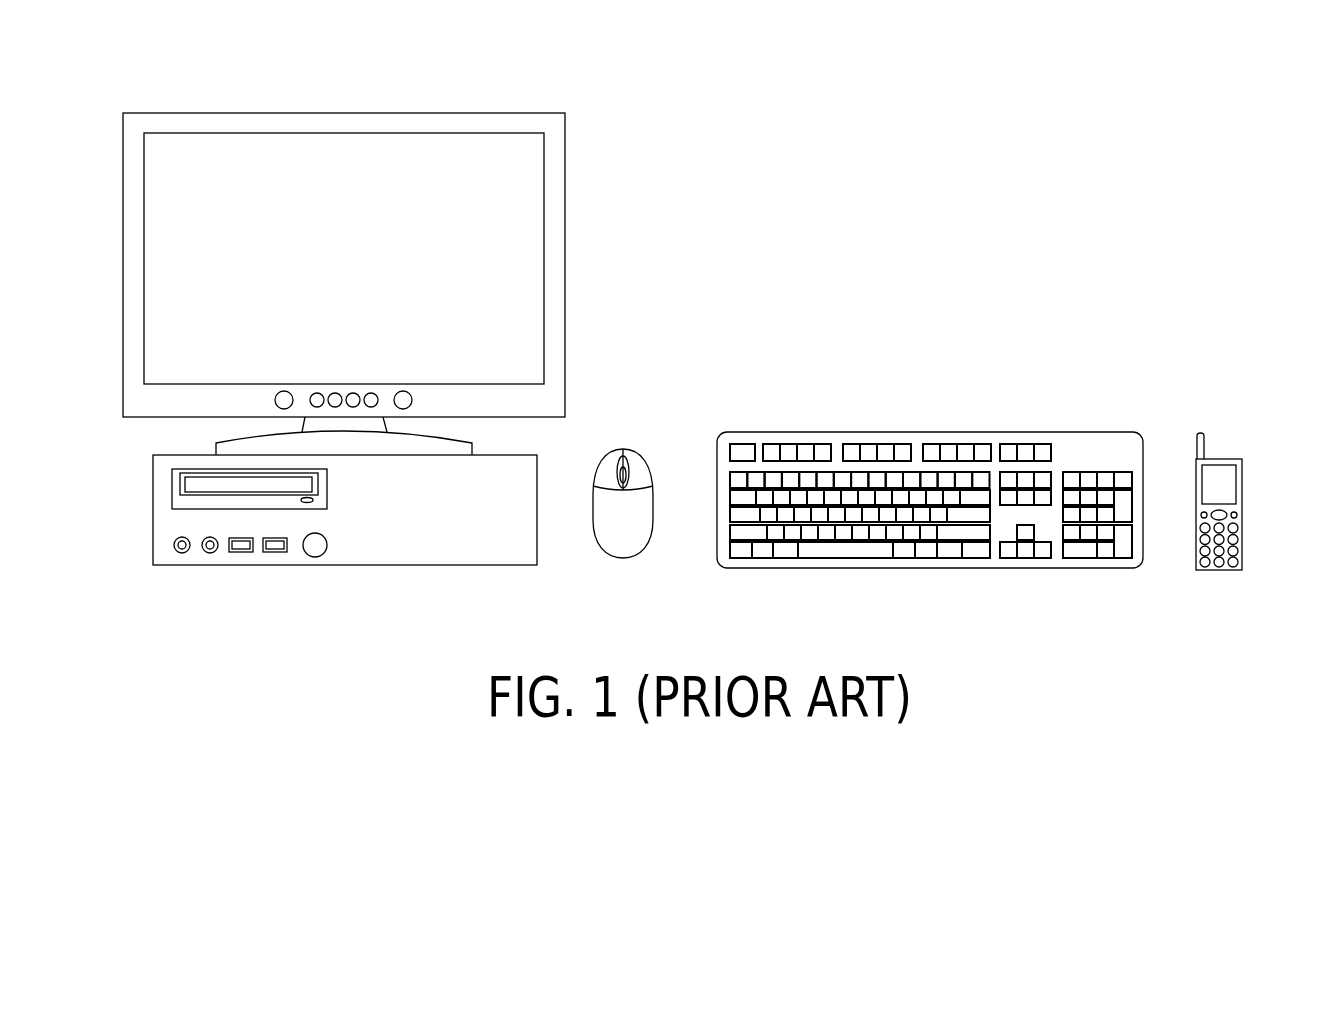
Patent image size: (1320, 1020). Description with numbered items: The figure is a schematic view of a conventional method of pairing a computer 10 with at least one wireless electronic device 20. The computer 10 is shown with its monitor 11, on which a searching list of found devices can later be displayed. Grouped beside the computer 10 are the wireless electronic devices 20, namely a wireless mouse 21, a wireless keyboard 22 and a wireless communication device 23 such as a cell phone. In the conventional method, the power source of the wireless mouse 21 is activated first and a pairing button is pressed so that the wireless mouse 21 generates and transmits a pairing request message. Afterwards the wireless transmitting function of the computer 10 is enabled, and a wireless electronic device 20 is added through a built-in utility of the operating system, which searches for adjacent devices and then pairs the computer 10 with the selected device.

The computer 10 is at (205, 60).
The monitor 11 is at (565, 210).
The wireless electronic device 20 is at (1238, 587).
The wireless mouse 21 is at (630, 447).
The wireless keyboard 22 is at (1075, 428).
The wireless communication device 23 is at (1223, 456).